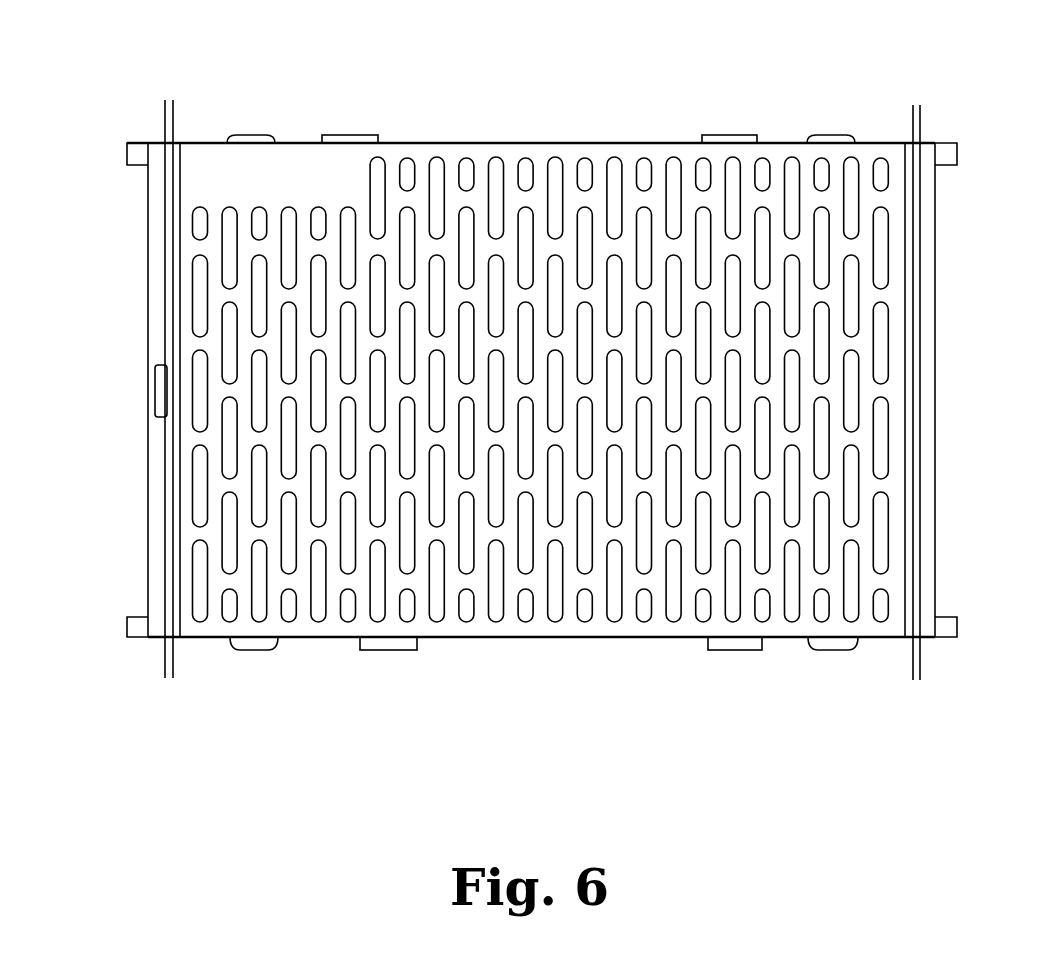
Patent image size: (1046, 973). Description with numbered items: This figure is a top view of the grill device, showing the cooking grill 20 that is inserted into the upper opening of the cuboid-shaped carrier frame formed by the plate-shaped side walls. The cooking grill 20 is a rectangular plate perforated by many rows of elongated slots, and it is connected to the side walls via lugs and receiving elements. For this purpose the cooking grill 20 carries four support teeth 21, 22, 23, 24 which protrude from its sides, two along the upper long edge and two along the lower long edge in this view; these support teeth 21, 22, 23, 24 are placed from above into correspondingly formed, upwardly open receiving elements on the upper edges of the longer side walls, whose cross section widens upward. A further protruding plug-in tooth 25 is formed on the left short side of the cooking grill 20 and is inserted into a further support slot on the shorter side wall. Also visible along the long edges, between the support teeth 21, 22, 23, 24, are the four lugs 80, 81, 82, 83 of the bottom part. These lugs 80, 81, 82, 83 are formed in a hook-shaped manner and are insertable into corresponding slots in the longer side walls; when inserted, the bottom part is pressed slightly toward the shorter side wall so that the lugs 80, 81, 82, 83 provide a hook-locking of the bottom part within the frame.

The cooking grill 20 is at (513, 173).
The support tooth 21 is at (822, 135).
The support tooth 22 is at (833, 650).
The support tooth 23 is at (238, 135).
The support tooth 24 is at (247, 650).
The plug-in tooth 25 is at (160, 383).
The lug 80 is at (730, 135).
The lug 81 is at (350, 135).
The lug 82 is at (752, 650).
The lug 83 is at (405, 650).